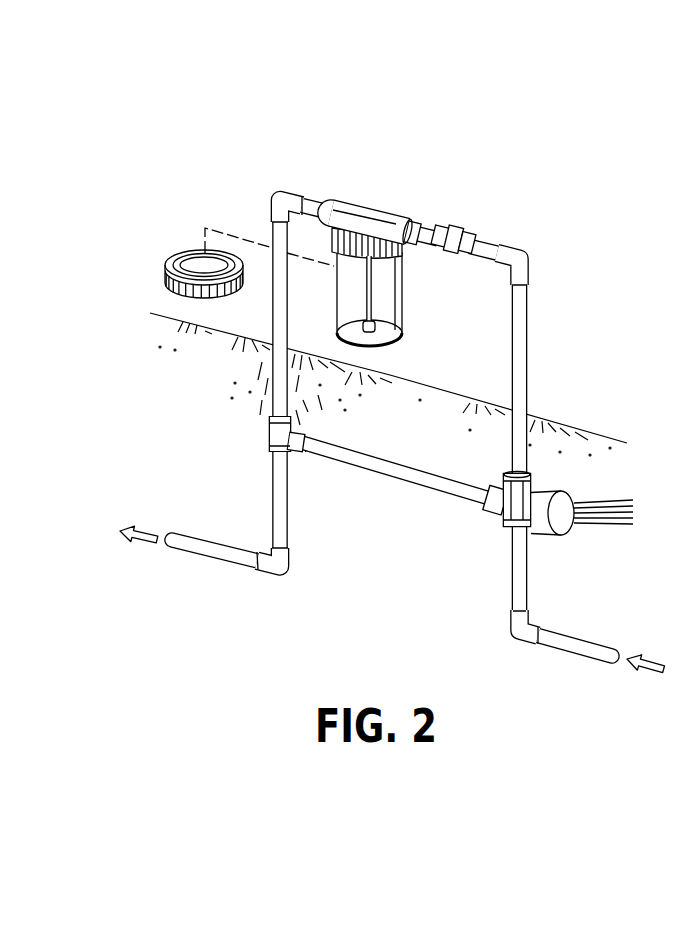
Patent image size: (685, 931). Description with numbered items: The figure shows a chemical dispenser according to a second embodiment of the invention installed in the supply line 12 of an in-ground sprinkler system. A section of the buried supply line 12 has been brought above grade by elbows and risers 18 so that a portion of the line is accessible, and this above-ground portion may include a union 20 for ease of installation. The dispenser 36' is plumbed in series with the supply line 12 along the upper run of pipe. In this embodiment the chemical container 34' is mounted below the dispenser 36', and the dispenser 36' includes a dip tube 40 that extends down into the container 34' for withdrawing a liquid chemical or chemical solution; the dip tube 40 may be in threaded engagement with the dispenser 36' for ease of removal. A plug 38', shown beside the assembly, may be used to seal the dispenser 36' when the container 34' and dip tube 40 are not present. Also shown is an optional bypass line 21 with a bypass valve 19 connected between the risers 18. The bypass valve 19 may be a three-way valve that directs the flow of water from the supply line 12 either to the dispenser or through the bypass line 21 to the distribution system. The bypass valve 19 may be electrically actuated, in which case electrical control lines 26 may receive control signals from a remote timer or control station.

The supply line 12 is at (568, 642).
The risers 18 is at (272, 307).
The bypass valve 19 is at (531, 481).
The union 20 is at (457, 228).
The bypass line 21 is at (363, 460).
The electrical control lines 26 is at (597, 521).
The chemical container 34' is at (405, 287).
The dispenser 36' is at (360, 194).
The plug 38' is at (173, 247).
The dip tube 40 is at (372, 293).